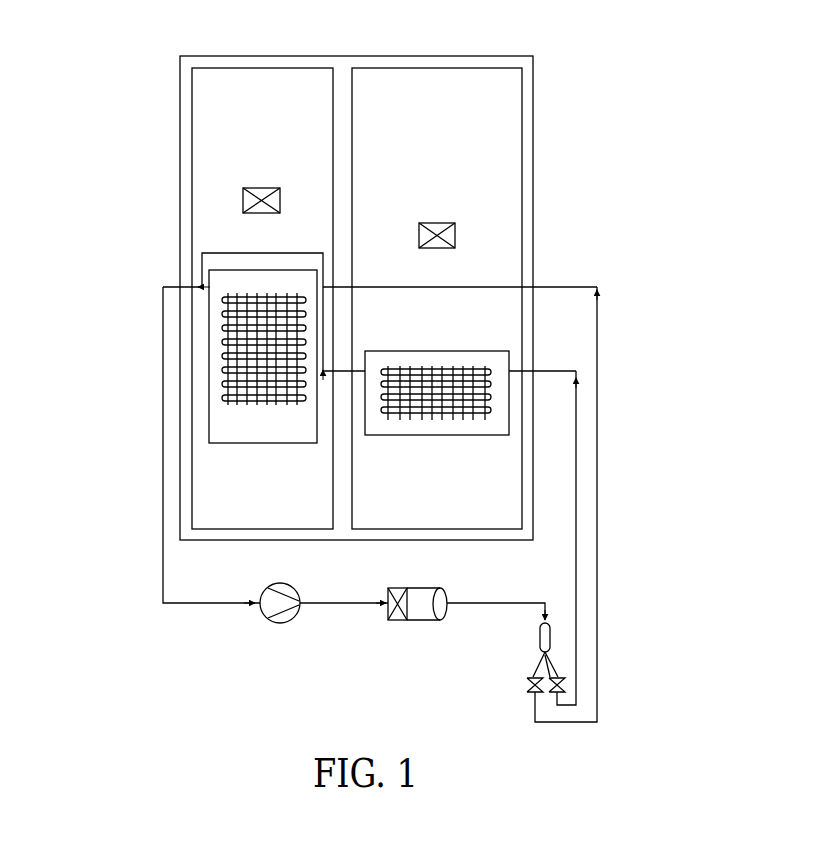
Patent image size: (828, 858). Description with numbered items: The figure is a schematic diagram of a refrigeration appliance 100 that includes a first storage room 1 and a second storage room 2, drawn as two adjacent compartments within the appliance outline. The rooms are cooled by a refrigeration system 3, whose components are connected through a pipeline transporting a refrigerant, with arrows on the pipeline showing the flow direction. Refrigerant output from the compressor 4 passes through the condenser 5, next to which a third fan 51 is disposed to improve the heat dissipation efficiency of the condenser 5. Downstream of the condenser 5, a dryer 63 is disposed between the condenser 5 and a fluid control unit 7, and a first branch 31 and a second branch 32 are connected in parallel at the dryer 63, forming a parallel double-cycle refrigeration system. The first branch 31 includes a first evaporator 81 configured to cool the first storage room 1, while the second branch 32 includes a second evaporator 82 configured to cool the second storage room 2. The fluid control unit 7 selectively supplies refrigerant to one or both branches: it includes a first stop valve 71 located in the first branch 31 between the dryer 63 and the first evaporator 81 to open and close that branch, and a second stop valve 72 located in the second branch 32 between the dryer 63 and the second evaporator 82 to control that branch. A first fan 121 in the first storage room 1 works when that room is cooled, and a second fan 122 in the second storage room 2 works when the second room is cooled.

The refrigeration appliance 100 is at (158, 111).
The first storage room 1 is at (262, 298).
The second storage room 2 is at (437, 298).
The first fan 121 is at (262, 188).
The second fan 122 is at (437, 222).
The first evaporator 81 is at (222, 352).
The second evaporator 82 is at (418, 368).
The refrigeration system 3 is at (426, 487).
The first branch 31 is at (598, 597).
The second branch 32 is at (578, 575).
The compressor 4 is at (268, 620).
The third fan 51 is at (395, 620).
The condenser 5 is at (420, 612).
The dryer 63 is at (540, 650).
The fluid control unit 7 is at (540, 693).
The first stop valve 71 is at (530, 690).
The second stop valve 72 is at (559, 688).